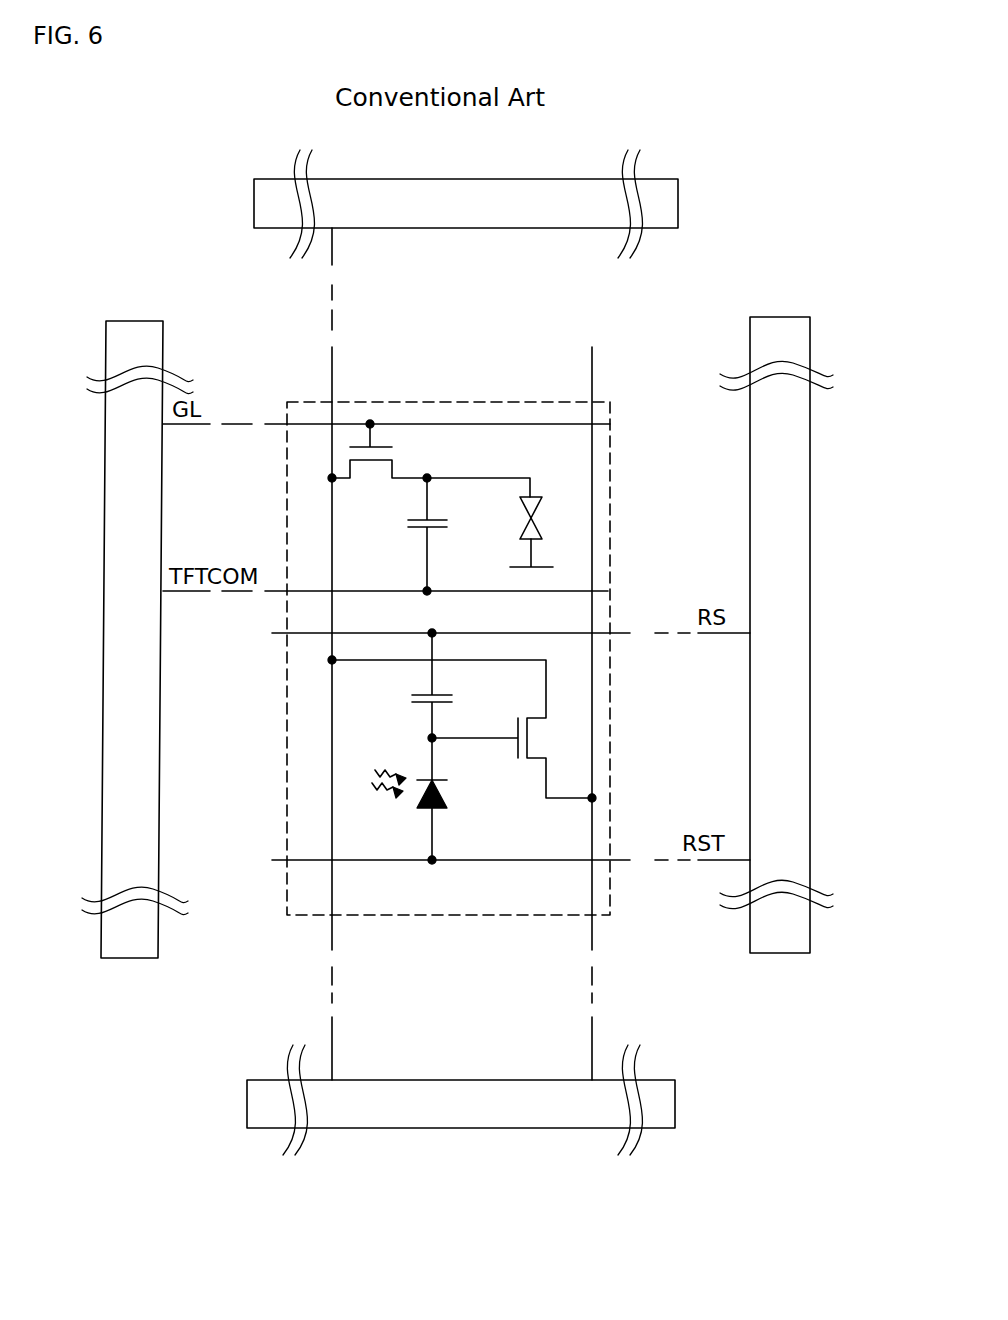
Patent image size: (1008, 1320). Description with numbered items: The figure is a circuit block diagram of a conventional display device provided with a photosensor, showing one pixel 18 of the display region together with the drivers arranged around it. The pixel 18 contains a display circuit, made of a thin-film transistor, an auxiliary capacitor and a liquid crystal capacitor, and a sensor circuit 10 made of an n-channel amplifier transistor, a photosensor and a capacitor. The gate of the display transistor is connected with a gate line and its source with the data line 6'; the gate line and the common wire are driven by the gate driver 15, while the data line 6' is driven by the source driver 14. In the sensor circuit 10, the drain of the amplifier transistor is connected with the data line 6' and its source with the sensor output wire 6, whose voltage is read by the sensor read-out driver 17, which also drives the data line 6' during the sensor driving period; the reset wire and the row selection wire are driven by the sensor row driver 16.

The source driver 14 is at (568, 179).
The gate driver 15 is at (122, 816).
The sensor row driver 16 is at (795, 800).
The sensor read-out driver 17 is at (562, 1128).
The pixel 18 is at (468, 400).
The sensor circuit 10 is at (641, 738).
The sensor output wire 6 is at (585, 713).
The data line 6' is at (367, 654).